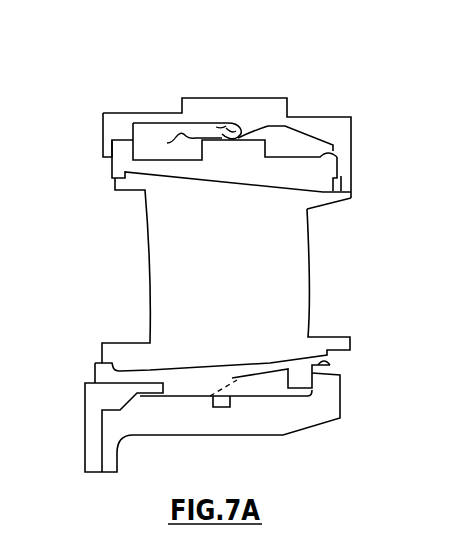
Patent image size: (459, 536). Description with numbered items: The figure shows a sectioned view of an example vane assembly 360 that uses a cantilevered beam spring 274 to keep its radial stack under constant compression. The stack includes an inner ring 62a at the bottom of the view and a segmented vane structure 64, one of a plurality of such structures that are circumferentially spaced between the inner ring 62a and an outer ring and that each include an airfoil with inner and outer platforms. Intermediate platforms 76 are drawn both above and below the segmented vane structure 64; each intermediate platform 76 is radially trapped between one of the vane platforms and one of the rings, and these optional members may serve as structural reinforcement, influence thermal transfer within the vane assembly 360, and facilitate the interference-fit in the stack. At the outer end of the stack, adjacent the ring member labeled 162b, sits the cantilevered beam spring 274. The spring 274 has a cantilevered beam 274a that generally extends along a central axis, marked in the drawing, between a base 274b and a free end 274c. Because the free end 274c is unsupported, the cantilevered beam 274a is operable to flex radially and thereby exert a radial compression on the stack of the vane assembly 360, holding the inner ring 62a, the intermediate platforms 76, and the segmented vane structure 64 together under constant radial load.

The vane assembly 360 is at (99, 280).
The aft housing 162b is at (313, 110).
The cantilevered beam spring 274 is at (264, 135).
The cantilevered beam 274a is at (226, 126).
The base 274b is at (244, 127).
The free end 274c is at (220, 118).
The intermediate platform 76 is at (337, 152).
The segmented vane structure 64 is at (318, 283).
The inner ring 62a is at (175, 443).